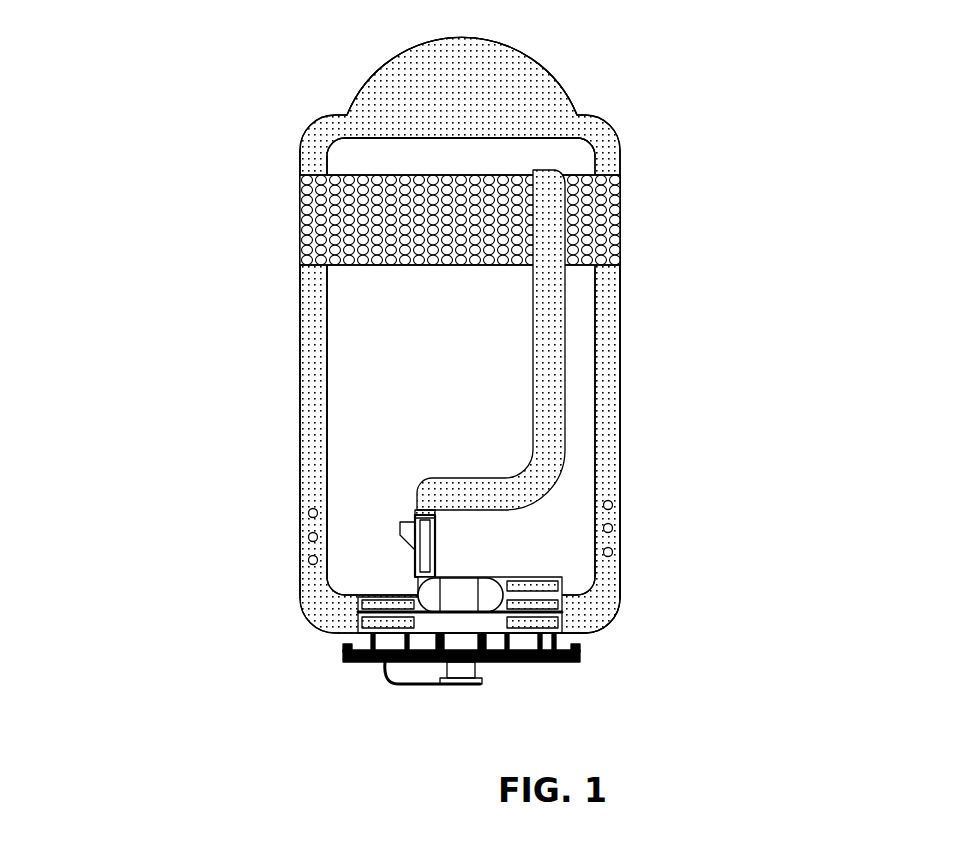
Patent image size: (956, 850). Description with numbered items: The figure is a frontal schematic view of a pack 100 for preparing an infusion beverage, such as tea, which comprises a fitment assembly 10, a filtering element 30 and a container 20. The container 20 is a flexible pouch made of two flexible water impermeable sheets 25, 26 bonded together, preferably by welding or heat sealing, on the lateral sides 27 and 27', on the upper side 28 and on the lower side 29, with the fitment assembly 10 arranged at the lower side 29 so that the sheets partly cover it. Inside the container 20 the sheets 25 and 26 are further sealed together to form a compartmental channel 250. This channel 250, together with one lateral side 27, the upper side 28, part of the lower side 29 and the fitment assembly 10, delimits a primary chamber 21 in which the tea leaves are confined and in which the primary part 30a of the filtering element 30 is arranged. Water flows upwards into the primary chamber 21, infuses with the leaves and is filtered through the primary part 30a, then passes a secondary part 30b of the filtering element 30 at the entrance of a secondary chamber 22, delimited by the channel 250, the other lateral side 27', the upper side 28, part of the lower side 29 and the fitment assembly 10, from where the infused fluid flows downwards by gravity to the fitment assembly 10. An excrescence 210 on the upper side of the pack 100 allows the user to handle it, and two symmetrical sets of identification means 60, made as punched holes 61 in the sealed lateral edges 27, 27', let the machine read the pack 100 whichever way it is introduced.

The pack 100 is at (155, 408).
The fitment assembly 10 is at (360, 663).
The container 20 is at (310, 618).
The primary chamber 21 is at (352, 368).
The secondary chamber 22 is at (580, 373).
The flexible water impermeable sheet 25 is at (300, 473).
The flexible water impermeable sheet 26 is at (622, 433).
The lateral side 27 is at (252, 374).
The lateral side 27' is at (683, 374).
The upper side 28 is at (595, 125).
The lower side 29 is at (597, 601).
The filtering element 30 is at (600, 220).
The primary part of the filtering element 30a is at (300, 208).
The secondary part of the filtering element 30b is at (600, 188).
The identification means 60 is at (607, 520).
The punched holes 61 is at (311, 560).
The excrescence 210 is at (505, 65).
The compartmental channel 250 is at (565, 333).